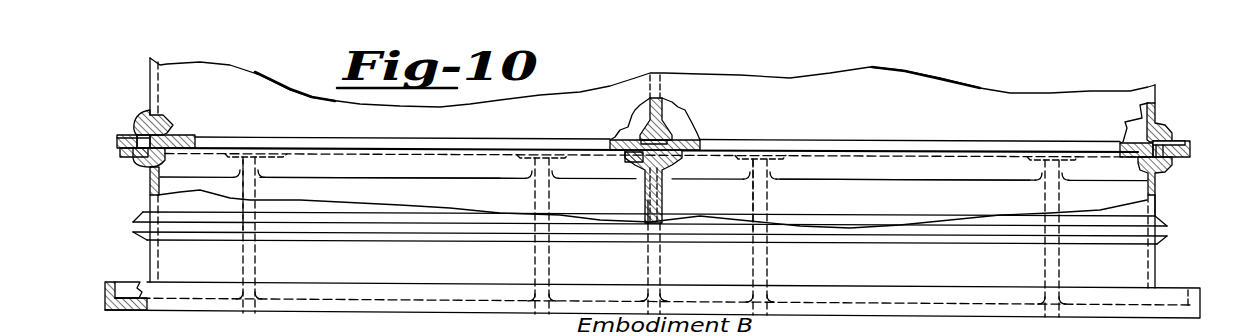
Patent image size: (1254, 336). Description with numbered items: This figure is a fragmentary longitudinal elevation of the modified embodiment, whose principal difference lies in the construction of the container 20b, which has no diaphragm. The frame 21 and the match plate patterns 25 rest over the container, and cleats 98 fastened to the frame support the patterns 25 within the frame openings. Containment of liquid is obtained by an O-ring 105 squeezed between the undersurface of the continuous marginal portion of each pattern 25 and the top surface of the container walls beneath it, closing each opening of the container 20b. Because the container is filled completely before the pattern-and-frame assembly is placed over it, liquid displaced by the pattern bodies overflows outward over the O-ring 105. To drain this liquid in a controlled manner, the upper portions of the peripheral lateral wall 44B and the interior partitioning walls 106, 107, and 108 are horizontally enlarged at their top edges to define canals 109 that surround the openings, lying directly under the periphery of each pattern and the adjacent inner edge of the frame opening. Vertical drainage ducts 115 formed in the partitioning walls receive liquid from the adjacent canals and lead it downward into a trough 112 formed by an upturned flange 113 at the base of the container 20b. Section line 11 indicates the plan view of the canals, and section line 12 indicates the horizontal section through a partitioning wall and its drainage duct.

The section line 11- 11 is at (116, 147).
The section line 12- 12 is at (645, 190).
The container 20b is at (1165, 264).
The frame 21 is at (1190, 147).
The pattern 25 is at (581, 138).
The peripheral lateral wall 44B is at (1157, 208).
The cleat 98 is at (135, 132).
The O-ring 105 is at (178, 135).
The partitioning wall 106 is at (662, 186).
The partitioning wall 107 is at (342, 173).
The partitioning wall 108 is at (897, 195).
The canal 109 is at (664, 176).
The trough 112 is at (123, 285).
The upturned flange 113 is at (107, 303).
The drainage duct 115 is at (257, 163).